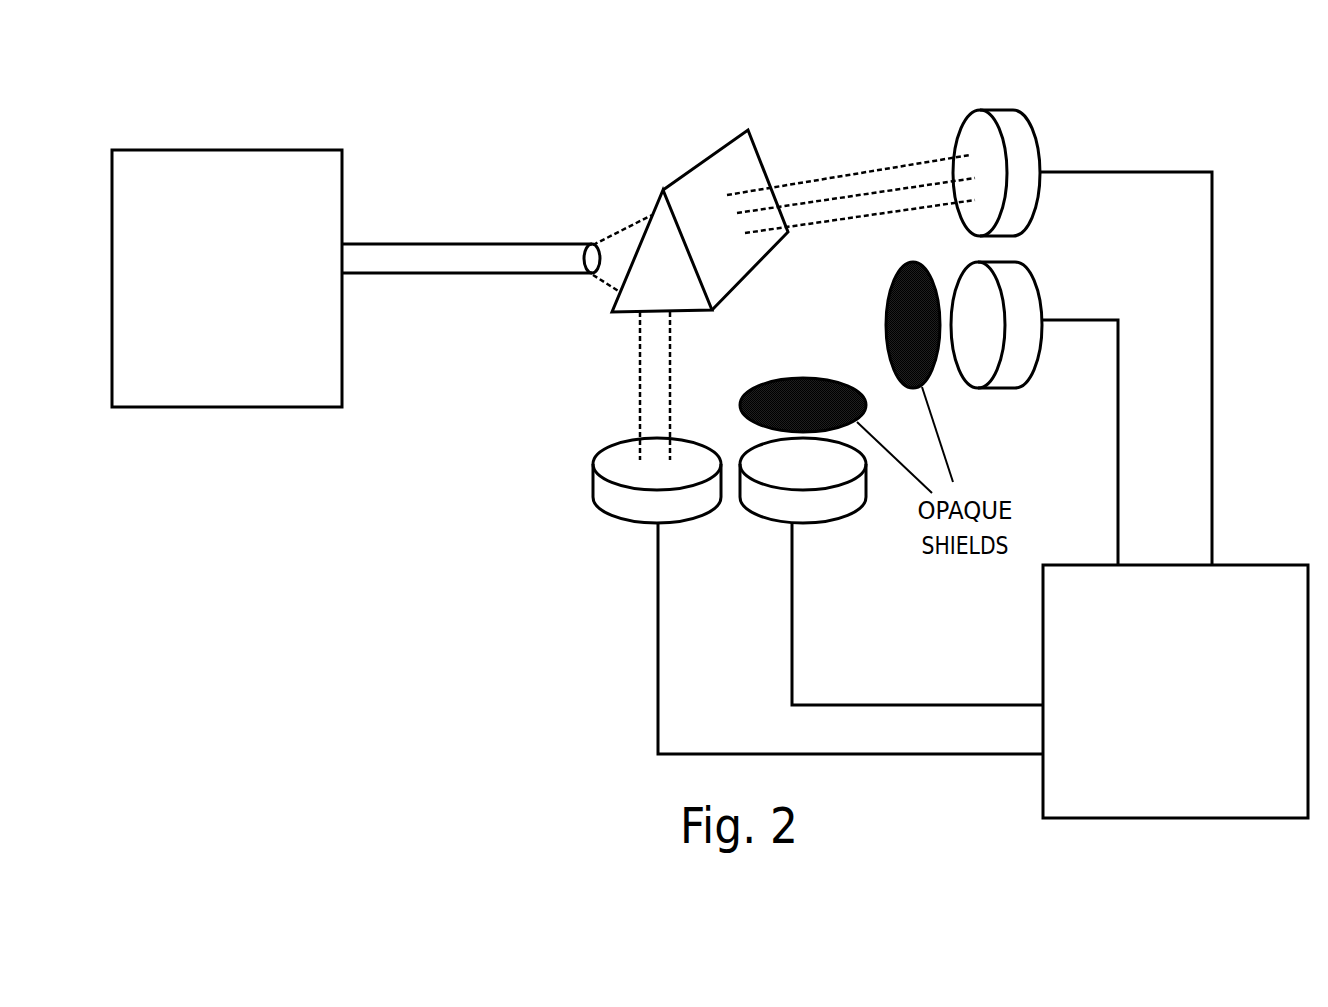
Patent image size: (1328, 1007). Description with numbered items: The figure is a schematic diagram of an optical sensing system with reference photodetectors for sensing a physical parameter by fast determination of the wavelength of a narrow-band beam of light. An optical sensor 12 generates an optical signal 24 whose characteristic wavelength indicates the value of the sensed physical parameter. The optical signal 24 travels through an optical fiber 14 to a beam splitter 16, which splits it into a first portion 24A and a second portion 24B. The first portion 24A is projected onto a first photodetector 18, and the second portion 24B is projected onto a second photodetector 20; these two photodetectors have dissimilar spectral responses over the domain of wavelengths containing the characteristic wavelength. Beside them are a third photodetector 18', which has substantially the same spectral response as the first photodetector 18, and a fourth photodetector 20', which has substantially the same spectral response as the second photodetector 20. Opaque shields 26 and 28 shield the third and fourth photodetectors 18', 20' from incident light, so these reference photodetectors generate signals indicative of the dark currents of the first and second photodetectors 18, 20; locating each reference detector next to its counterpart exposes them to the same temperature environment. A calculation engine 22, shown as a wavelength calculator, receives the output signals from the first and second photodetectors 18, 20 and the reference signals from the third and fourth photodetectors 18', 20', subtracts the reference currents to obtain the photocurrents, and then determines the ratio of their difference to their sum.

The optical sensor 12 is at (227, 278).
The optical fiber 14 is at (483, 242).
The beam splitter 16 is at (722, 255).
The first photodetector 18 is at (1082, 319).
The third photodetector 18' is at (1038, 413).
The second photodetector 20 is at (775, 596).
The fourth photodetector 20' is at (891, 571).
The calculation engine 22 is at (1175, 691).
The optical signal 24 is at (611, 216).
The first portion of optical signal 24A is at (870, 160).
The second portion of optical signal 24B is at (630, 366).
The opaque shield 26 is at (903, 305).
The opaque shield 28 is at (812, 402).